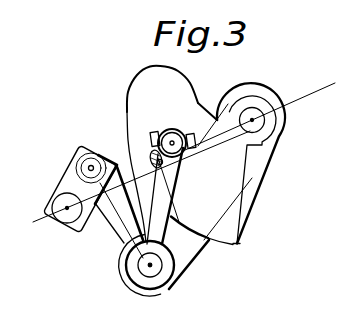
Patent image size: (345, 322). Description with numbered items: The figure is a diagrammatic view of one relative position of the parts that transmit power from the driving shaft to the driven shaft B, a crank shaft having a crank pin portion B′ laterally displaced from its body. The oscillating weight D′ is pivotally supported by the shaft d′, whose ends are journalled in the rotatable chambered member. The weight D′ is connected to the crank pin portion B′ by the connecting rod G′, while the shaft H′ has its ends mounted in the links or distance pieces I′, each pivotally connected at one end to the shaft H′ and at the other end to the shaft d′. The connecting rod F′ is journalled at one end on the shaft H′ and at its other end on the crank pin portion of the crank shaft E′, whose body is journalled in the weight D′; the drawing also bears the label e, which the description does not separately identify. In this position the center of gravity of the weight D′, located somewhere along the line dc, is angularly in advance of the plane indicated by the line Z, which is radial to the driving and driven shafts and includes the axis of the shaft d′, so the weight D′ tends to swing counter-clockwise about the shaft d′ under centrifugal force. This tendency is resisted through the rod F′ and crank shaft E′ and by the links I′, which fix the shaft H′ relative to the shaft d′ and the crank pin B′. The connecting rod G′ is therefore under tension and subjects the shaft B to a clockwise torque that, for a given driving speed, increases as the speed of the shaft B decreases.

The crank shaft E′ is at (171, 128).
The eccentric pulley e is at (152, 148).
The line Z is at (115, 153).
The crank pin portion B′ is at (78, 170).
The driven shaft B is at (63, 221).
The connecting rod G′ is at (113, 224).
The shaft H′ is at (150, 268).
The links or distance pieces I′ is at (191, 243).
The oscillating weight D′ is at (243, 213).
The line dc is at (244, 168).
The connecting rod F′ is at (168, 196).
The shaft d′ is at (252, 120).